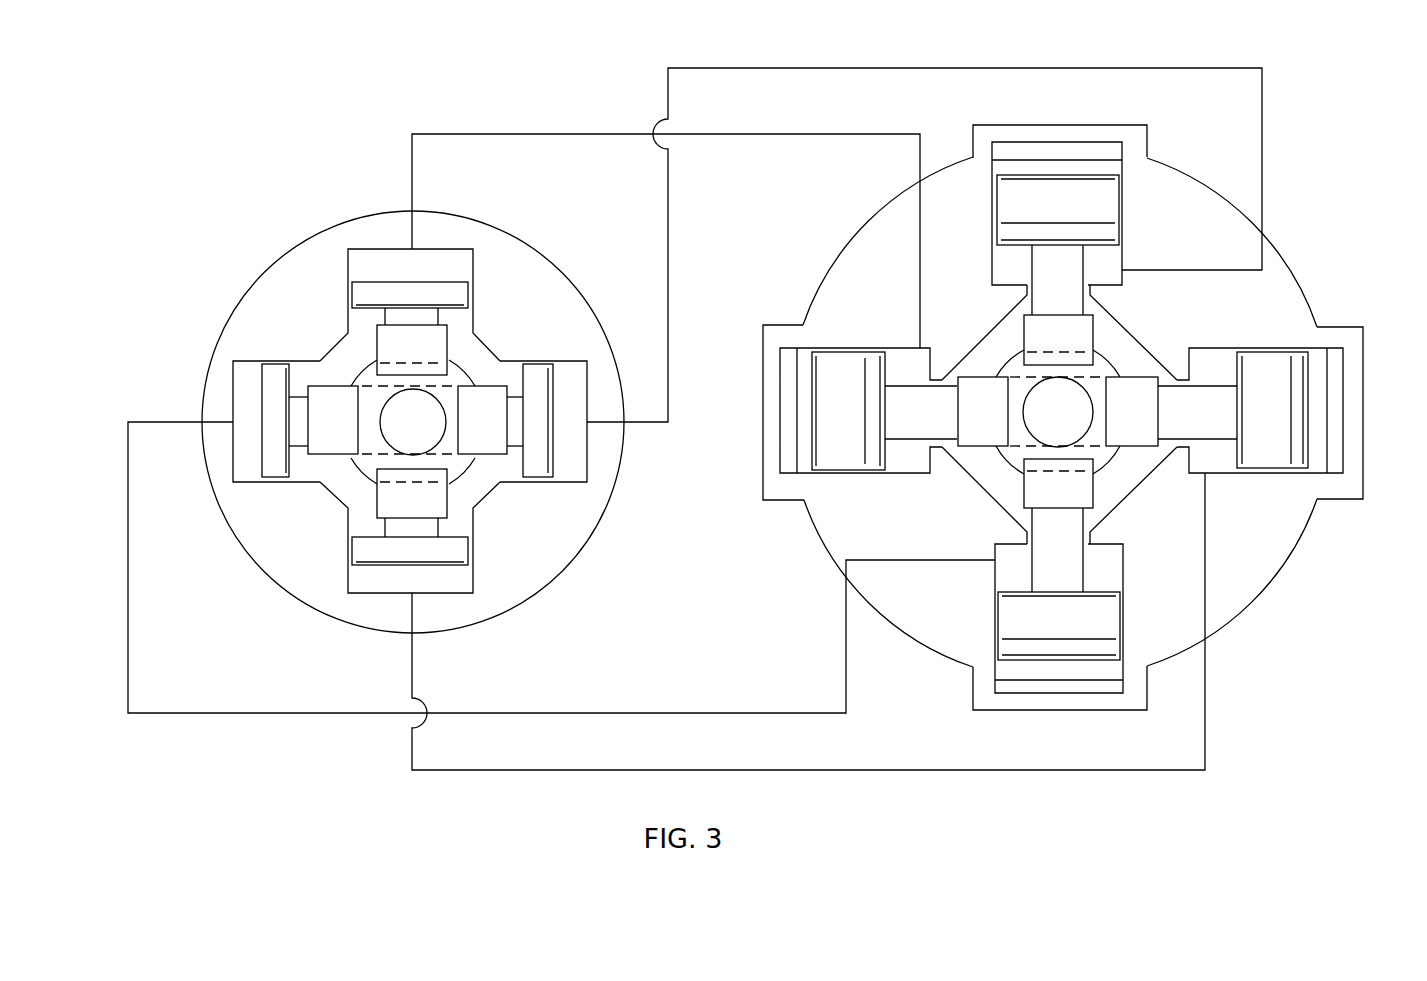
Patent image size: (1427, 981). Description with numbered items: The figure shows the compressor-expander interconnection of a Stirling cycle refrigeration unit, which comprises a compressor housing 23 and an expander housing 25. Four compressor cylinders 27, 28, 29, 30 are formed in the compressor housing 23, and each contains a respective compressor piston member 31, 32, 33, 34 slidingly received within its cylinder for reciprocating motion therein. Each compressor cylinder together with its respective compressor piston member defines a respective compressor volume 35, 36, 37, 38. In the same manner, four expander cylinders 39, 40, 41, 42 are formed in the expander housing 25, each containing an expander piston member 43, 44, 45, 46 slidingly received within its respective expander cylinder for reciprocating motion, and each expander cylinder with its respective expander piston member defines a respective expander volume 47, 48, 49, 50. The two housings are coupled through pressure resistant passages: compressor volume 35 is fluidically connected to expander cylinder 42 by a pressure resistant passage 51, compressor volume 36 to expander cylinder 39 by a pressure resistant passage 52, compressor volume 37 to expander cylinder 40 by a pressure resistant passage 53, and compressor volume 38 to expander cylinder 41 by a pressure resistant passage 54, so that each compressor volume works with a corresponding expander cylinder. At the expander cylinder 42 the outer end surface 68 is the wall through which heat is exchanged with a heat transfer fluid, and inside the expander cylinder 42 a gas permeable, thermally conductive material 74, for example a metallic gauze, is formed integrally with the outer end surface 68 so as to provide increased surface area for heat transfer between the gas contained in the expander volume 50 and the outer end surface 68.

The compressor housing 23 is at (250, 560).
The expander housing 25 is at (1272, 582).
The compressor cylinder 27 is at (347, 323).
The compressor cylinder 28 is at (513, 488).
The compressor cylinder 29 is at (343, 528).
The compressor cylinder 30 is at (300, 357).
The compressor piston member 31 is at (360, 290).
The compressor piston member 32 is at (537, 467).
The compressor piston member 33 is at (377, 543).
The compressor piston member 34 is at (273, 378).
The compressor volume 35 is at (400, 262).
The compressor volume 36 is at (570, 467).
The compressor volume 37 is at (395, 578).
The compressor volume 38 is at (243, 410).
The expander cylinder 39 is at (1125, 198).
The expander cylinder 40 is at (1287, 475).
The expander cylinder 41 is at (1123, 596).
The expander cylinder 42 is at (840, 345).
The expander piston member 43 is at (1063, 192).
The expander piston member 44 is at (1282, 360).
The expander piston member 45 is at (1108, 645).
The expander piston member 46 is at (850, 452).
The expander volume 47 is at (1030, 168).
The expander volume 48 is at (1318, 385).
The expander volume 49 is at (1067, 670).
The expander volume 50 is at (805, 452).
The pressure resistant passage 51 is at (552, 134).
The pressure resistant passage 52 is at (845, 68).
The pressure resistant passage 53 is at (970, 770).
The pressure resistant passage 54 is at (848, 680).
The outer end surface 68 is at (765, 327).
The gas permeable, thermally conductive material 74 is at (790, 420).